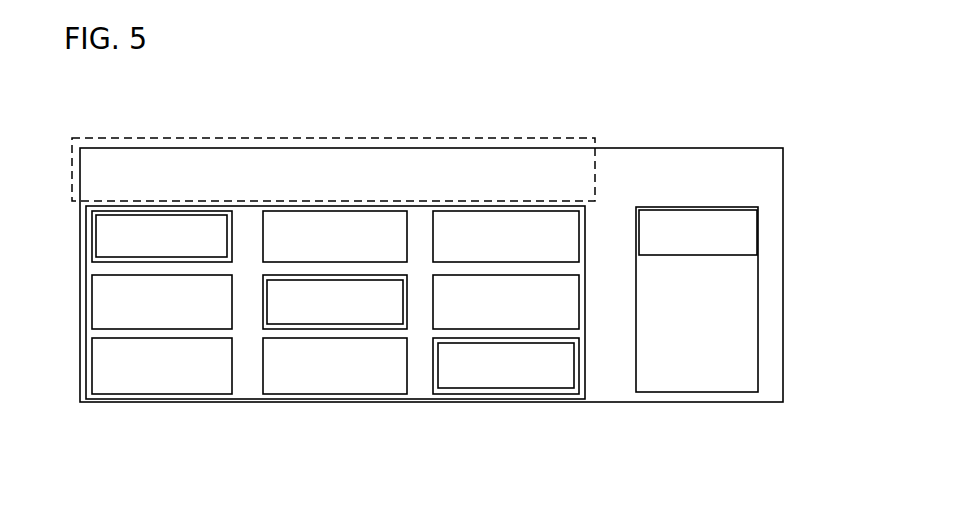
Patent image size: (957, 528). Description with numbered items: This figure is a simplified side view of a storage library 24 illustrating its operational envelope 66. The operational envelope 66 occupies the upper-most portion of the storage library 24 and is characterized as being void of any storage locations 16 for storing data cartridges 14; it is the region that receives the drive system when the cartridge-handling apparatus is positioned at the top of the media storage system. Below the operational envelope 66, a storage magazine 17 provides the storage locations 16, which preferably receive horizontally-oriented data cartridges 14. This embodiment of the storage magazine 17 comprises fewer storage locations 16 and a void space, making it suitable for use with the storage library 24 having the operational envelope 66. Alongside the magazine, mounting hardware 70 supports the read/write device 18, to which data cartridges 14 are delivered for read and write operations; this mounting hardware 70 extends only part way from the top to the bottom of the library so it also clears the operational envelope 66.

The data cartridge 14 is at (117, 257).
The storage location 16 is at (90, 317).
The storage magazine 17 is at (242, 398).
The read/write device 18 is at (673, 257).
The storage library 24 is at (700, 147).
The operational envelope 66 is at (597, 167).
The mounting hardware 70 is at (758, 353).